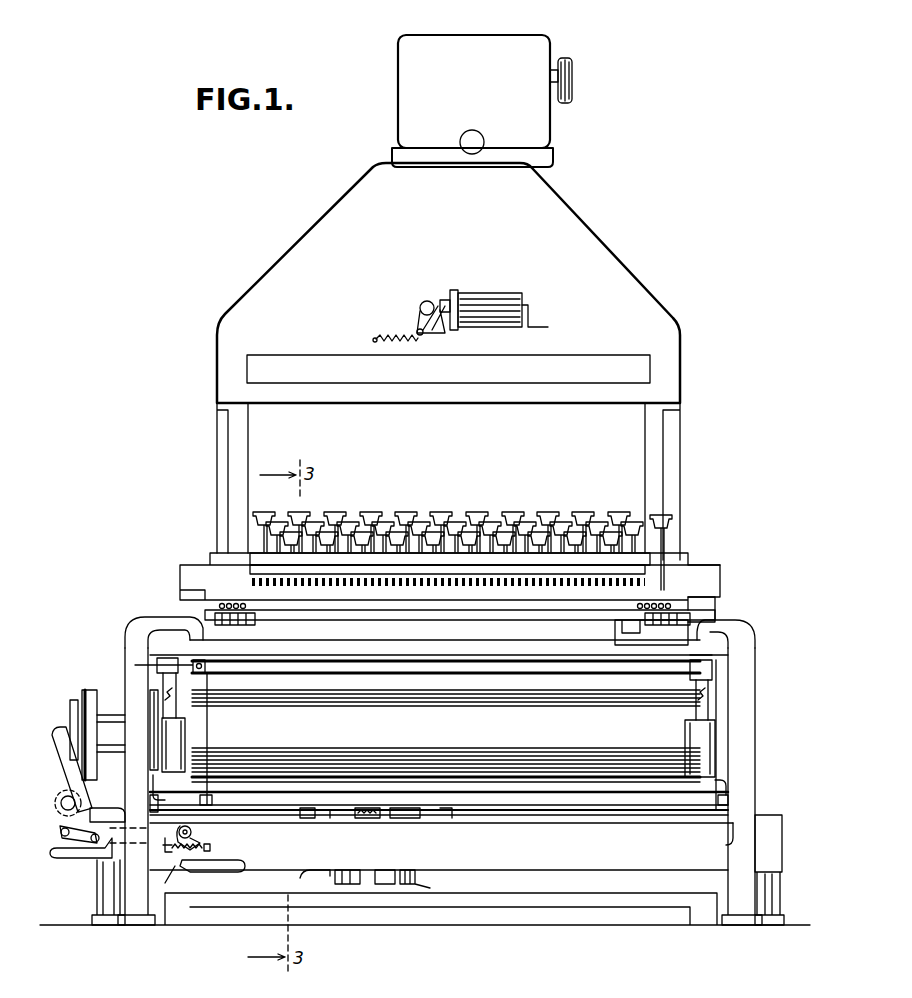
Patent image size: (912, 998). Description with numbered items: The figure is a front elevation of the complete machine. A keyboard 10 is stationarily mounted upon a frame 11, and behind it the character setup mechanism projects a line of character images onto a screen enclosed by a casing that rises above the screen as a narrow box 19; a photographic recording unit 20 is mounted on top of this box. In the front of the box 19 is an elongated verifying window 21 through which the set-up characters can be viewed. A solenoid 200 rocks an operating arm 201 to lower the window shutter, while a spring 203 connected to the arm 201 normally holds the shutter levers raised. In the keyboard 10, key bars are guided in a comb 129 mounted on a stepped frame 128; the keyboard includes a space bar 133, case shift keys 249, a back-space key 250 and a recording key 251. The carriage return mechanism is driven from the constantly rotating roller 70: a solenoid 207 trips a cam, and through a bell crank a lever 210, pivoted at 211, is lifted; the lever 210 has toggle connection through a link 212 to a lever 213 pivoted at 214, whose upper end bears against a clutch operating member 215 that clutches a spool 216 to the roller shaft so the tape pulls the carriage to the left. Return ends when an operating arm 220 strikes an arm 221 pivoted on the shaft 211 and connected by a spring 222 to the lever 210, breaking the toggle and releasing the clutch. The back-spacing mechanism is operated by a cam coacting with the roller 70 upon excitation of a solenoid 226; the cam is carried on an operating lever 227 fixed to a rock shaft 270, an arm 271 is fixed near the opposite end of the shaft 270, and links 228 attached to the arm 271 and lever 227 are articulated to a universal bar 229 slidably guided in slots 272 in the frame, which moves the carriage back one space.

The keyboard 10 is at (505, 505).
The frame 11 is at (130, 652).
The narrow box 19 is at (262, 278).
The photographic recording unit 20 is at (398, 70).
The verifying window 21 is at (612, 357).
The roller 70 is at (446, 719).
The stepped frame 128 is at (712, 614).
The comb 129 is at (690, 557).
The space bar 133 is at (366, 552).
The solenoid 200 is at (490, 300).
The operating arm 201 is at (420, 310).
The spring 203 is at (388, 334).
The solenoid 207 is at (188, 740).
The lever 210 is at (170, 852).
The pivot 211 is at (192, 831).
The link 212 is at (72, 850).
The lever 213 is at (60, 788).
The pivot 214 is at (62, 815).
The clutch operating member 215 is at (70, 722).
The spool 216 is at (100, 692).
The operating arm 220 is at (325, 875).
The arm 221 is at (230, 872).
The spring 222 is at (200, 855).
The solenoid 226 is at (718, 744).
The operating lever 227 is at (716, 792).
The links 228 is at (730, 803).
The universal bar 229 is at (505, 812).
The case shift keys 249 is at (258, 545).
The back-space key 250 is at (672, 522).
The recording key 251 is at (640, 522).
The rock shaft 270 is at (455, 690).
The arm 271 is at (210, 718).
The slots 272 is at (150, 805).